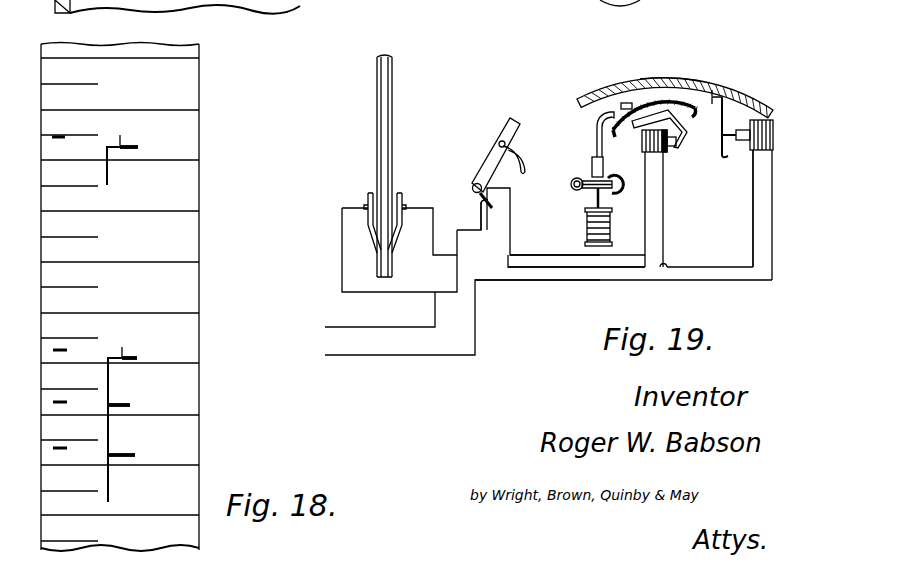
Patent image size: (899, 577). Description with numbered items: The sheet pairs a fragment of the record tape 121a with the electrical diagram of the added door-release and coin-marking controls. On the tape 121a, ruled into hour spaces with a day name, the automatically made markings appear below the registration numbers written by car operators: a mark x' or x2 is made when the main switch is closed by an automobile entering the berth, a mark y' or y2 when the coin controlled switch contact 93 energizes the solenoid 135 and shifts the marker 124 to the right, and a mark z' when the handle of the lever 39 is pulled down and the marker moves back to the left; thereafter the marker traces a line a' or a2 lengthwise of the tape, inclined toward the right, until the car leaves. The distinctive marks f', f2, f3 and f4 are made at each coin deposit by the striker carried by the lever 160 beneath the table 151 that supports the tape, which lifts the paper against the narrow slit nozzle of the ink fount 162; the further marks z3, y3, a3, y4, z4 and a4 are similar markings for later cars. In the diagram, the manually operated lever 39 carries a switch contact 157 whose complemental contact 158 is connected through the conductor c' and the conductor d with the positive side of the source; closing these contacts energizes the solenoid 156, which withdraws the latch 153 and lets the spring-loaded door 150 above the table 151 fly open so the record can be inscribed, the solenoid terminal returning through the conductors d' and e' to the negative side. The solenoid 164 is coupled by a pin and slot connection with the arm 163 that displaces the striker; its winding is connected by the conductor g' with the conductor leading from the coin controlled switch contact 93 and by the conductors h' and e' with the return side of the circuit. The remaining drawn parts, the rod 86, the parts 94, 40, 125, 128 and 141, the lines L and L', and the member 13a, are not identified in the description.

In FIG. 19, the plunger rod 86 is at (393, 108).
In FIG. 19, the coin controlled switch contact 93 is at (398, 242).
In FIG. 19, the guide jaw 94 is at (371, 240).
In FIG. 19, the manually operated lever 39 is at (508, 117).
In FIG. 19, the spring arm 40 is at (518, 152).
In FIG. 19, the switch contact 157 is at (490, 205).
In FIG. 19, the complemental contact 158 is at (478, 200).
In FIG. 19, the marker 124 is at (598, 118).
In FIG. 19, the sleeve 125 is at (592, 165).
In FIG. 19, the pivot link 128 is at (571, 182).
In FIG. 19, the hook 141 is at (620, 178).
In FIG. 19, the solenoid 135 is at (598, 250).
In FIG. 19, the table 151 is at (655, 100).
In FIG. 19, the lever 160 is at (668, 77).
In FIG. 19, the door 150 is at (690, 79).
In FIG. 19, the ink fount 162 is at (625, 103).
In FIG. 19, the frame member 13a is at (740, 90).
In FIG. 19, the solenoid 156 is at (765, 120).
In FIG. 19, the arm 163 is at (686, 126).
In FIG. 19, the solenoid 164 is at (658, 152).
In FIG. 19, the latch 153 is at (721, 150).
In FIG. 18, the record tape 121a is at (180, 276).
In FIG. 18, the distinctive mark f' is at (37, 139).
In FIG. 19, the distinctive mark f' is at (555, 239).
In FIG. 18, the line a' is at (58, 172).
In FIG. 18, the mark x' is at (168, 154).
In FIG. 18, the mark y' is at (189, 145).
In FIG. 18, the mark z' is at (171, 166).
In FIG. 18, the distinctive mark f2 is at (53, 349).
In FIG. 18, the distinctive mark f3 is at (53, 402).
In FIG. 18, the distinctive mark f4 is at (53, 448).
In FIG. 18, the mark x2 is at (123, 350).
In FIG. 18, the mark y2 is at (132, 357).
In FIG. 18, the contact z3 is at (130, 360).
In FIG. 18, the line a2 is at (110, 387).
In FIG. 18, the contact y3 is at (135, 405).
In FIG. 18, the contact line a3 is at (112, 435).
In FIG. 18, the contact y4 is at (135, 456).
In FIG. 18, the contact z4 is at (120, 458).
In FIG. 18, the contact line a4 is at (110, 500).
In FIG. 19, the line conductor L is at (380, 309).
In FIG. 19, the line conductor L' is at (548, 331).
In FIG. 19, the conductor d is at (401, 269).
In FIG. 19, the conductor c' is at (474, 225).
In FIG. 19, the conductor e' is at (537, 295).
In FIG. 19, the conductor g' is at (578, 239).
In FIG. 19, the conductor h' is at (699, 209).
In FIG. 19, the conductor d' is at (775, 215).